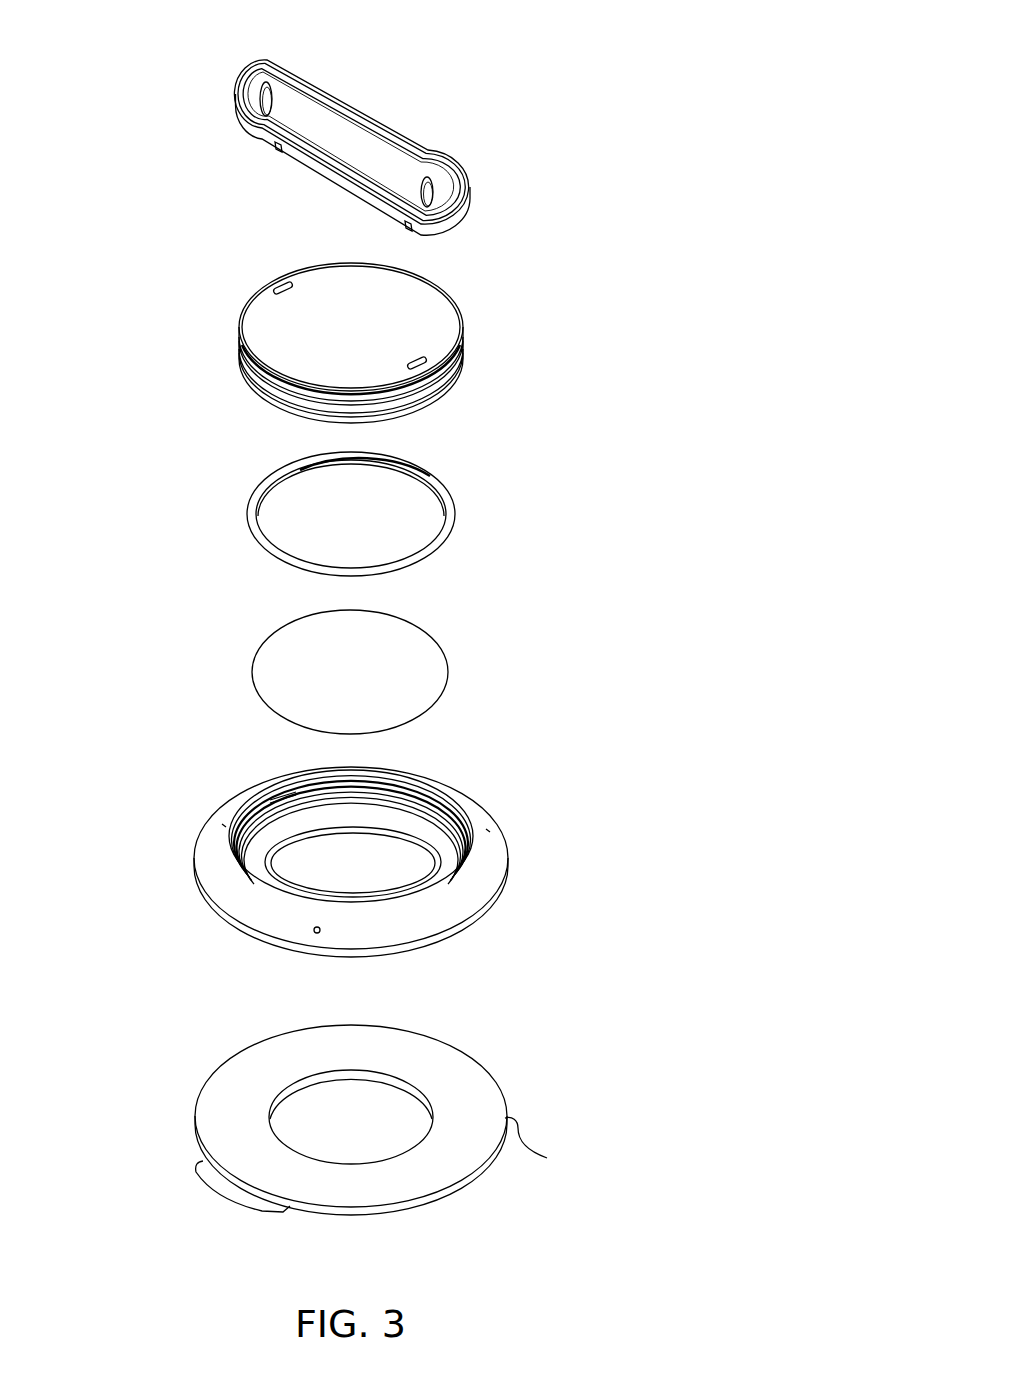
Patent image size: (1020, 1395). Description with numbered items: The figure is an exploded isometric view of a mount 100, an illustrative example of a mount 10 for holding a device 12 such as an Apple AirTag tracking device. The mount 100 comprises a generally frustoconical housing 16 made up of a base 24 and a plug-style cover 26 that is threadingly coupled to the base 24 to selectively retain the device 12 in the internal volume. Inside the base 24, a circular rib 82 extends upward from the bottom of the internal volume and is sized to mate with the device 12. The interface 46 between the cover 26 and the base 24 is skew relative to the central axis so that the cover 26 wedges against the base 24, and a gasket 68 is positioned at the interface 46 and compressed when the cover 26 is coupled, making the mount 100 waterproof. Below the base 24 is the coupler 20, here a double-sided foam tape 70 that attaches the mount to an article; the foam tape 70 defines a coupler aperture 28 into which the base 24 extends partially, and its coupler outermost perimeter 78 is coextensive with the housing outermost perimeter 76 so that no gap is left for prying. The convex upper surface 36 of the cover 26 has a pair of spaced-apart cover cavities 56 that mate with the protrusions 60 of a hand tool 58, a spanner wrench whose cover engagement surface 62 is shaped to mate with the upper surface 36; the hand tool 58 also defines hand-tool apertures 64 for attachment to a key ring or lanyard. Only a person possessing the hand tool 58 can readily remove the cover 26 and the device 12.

The mount 10 is at (693, 67).
The mount 100 is at (687, 120).
The hand tool 58 is at (353, 156).
The hand-tool aperture 64 is at (252, 126).
The spaced-apart protrusions 60 is at (277, 152).
The cover engagement surface 62 is at (340, 170).
The cover 26 is at (377, 327).
The upper surface 36 is at (365, 351).
The spaced-apart cover cavities 56 is at (280, 290).
The housing 16 is at (459, 590).
The gasket 68 is at (446, 502).
The device 12 is at (421, 650).
The base 24 is at (370, 860).
The interface 46 is at (282, 788).
The rib 82 is at (413, 832).
The housing outermost perimeter 76 is at (492, 908).
The coupler 20 is at (335, 1120).
The coupler aperture 28 is at (300, 1086).
The double-sided foam tape 70 is at (196, 1143).
The coupler outermost perimeter 78 is at (541, 1145).